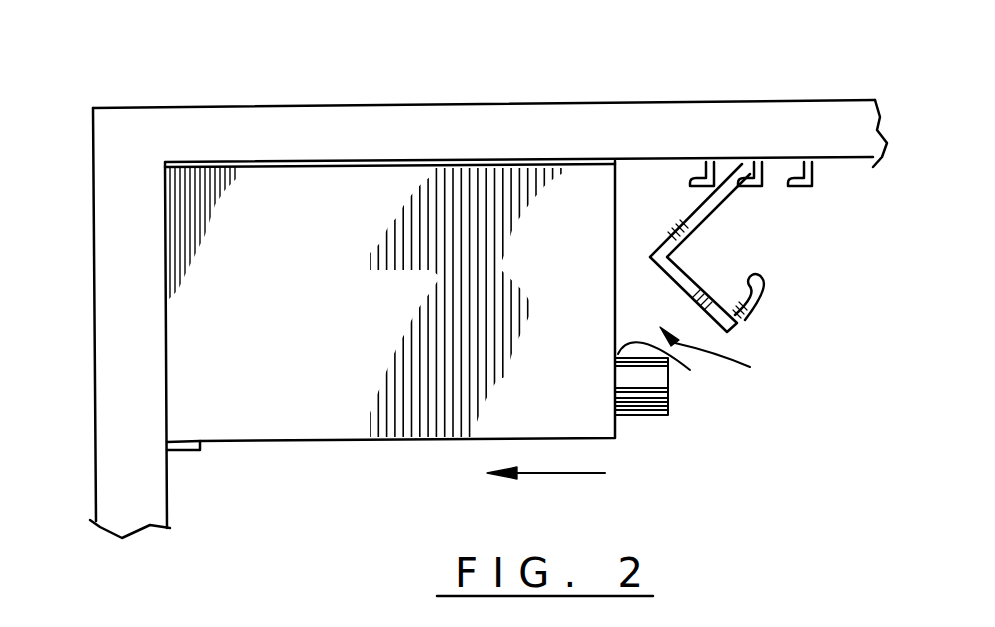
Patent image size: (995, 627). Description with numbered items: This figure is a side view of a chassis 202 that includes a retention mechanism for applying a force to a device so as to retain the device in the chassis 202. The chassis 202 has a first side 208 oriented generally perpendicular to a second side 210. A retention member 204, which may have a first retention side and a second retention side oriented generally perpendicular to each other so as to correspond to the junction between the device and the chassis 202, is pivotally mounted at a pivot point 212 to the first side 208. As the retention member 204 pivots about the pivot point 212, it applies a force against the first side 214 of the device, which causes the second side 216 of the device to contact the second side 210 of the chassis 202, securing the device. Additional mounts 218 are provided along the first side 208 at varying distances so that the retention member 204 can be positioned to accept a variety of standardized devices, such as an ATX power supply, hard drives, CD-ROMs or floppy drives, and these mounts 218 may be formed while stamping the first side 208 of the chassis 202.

The chassis 202 is at (275, 78).
The retention member 204 is at (703, 282).
The first side of the chassis 208 is at (543, 102).
The second side of the chassis 210 is at (118, 345).
The pivot point 212 is at (742, 167).
The first side of the device 214 is at (705, 366).
The second side of the device 216 is at (168, 378).
The mounts 218 is at (706, 183).